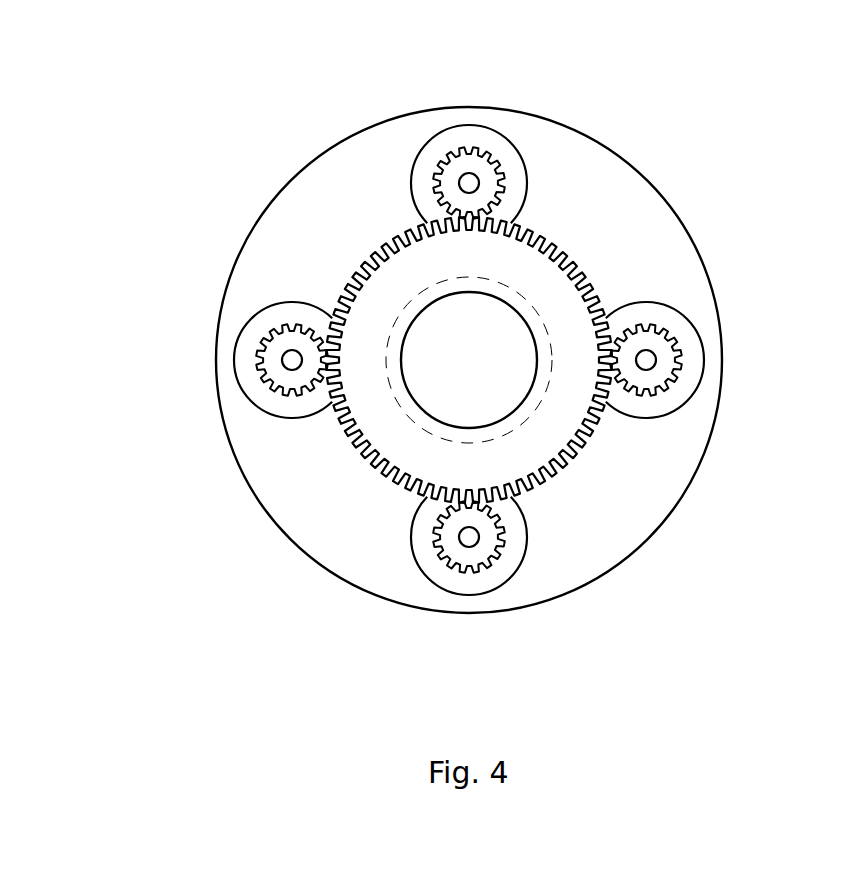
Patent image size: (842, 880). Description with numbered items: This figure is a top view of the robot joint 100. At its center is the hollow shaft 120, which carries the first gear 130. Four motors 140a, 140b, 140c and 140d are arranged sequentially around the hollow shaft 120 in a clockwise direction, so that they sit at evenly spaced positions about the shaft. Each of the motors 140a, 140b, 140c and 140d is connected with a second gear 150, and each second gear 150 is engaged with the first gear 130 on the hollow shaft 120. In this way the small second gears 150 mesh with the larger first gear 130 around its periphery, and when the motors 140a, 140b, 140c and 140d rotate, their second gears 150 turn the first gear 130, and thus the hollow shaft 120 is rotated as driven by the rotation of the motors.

The robot joint 100 is at (218, 122).
The hollow shaft 120 is at (515, 300).
The first gear 130 is at (558, 432).
The motor 140a is at (473, 135).
The motor 140b is at (713, 356).
The motor 140c is at (472, 582).
The motor 140d is at (245, 355).
The second gear 150 is at (663, 366).